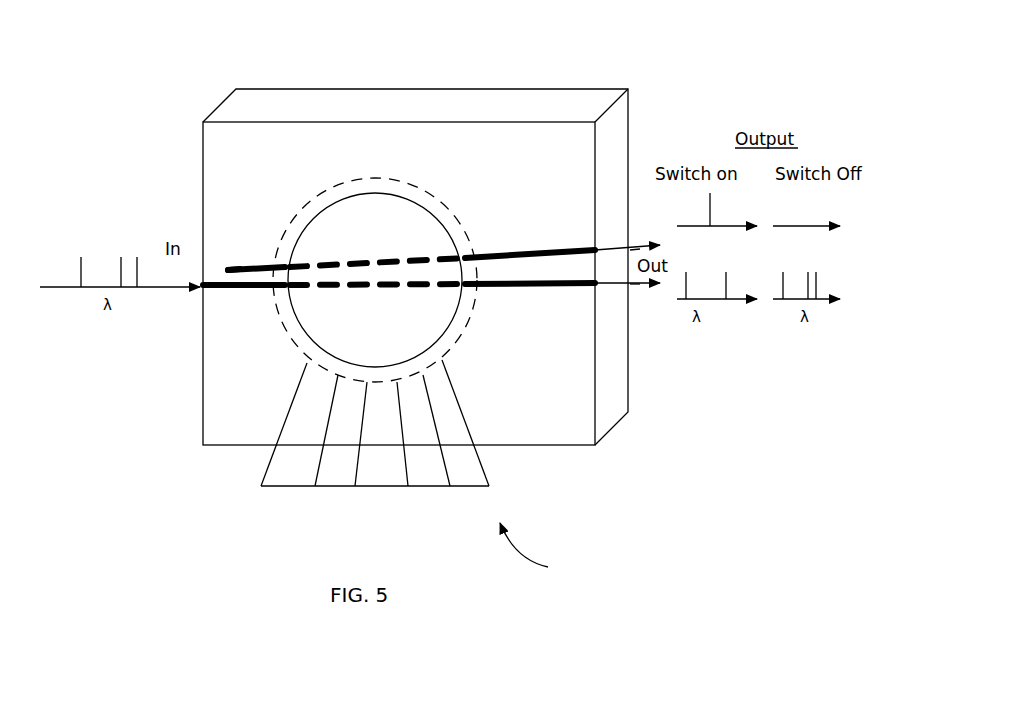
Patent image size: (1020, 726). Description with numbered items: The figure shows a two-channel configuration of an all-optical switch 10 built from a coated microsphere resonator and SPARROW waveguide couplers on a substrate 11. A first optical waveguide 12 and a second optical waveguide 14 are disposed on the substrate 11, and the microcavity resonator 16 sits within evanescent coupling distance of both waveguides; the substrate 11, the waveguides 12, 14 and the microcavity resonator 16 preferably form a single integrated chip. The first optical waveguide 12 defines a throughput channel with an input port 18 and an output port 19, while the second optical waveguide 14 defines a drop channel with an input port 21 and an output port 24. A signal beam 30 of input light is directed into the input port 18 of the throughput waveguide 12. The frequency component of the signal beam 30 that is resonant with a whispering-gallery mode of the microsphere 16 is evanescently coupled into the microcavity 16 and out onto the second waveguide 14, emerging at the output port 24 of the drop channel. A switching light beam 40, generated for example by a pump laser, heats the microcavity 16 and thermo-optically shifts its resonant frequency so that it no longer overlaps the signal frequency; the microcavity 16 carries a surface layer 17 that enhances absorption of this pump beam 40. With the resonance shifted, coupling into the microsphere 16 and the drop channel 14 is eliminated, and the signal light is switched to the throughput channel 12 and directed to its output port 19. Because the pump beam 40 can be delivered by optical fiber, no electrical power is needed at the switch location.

The optical switch 10 is at (543, 548).
The substrate 11 is at (308, 106).
The first optical waveguide 12 is at (549, 287).
The second optical waveguide 14 is at (539, 252).
The optical microcavity resonator 16 is at (316, 210).
The surface layer 17 is at (379, 186).
The input port 18 is at (195, 297).
The output port 19 is at (637, 289).
The input port 21 is at (228, 268).
The output port 24 is at (635, 243).
The signal beam 30 is at (82, 296).
The switching light beam 40 is at (298, 397).